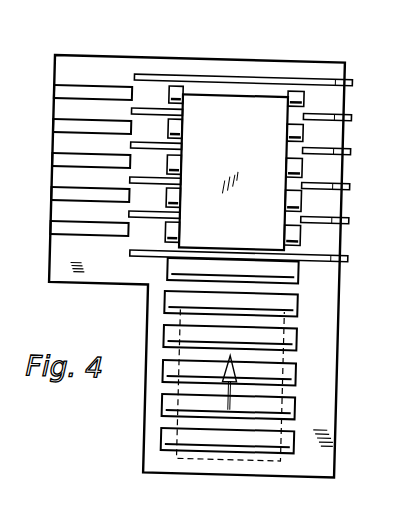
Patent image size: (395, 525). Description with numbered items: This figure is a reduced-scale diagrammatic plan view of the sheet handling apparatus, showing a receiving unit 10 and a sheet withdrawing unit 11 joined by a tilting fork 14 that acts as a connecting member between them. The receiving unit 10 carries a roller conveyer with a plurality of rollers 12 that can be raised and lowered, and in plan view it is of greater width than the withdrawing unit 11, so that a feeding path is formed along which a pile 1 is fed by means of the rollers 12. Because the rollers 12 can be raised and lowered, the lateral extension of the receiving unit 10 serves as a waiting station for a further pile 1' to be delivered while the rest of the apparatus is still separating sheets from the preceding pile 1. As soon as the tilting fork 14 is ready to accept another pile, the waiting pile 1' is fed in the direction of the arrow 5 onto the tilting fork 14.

The pile 1 is at (234, 143).
The pile to be delivered 1' is at (229, 412).
The arrow 5 is at (238, 405).
The receiving unit 10 is at (310, 295).
The sheet withdrawing unit 11 is at (71, 177).
The rollers 12 is at (297, 94).
The tilting fork 14 is at (347, 106).